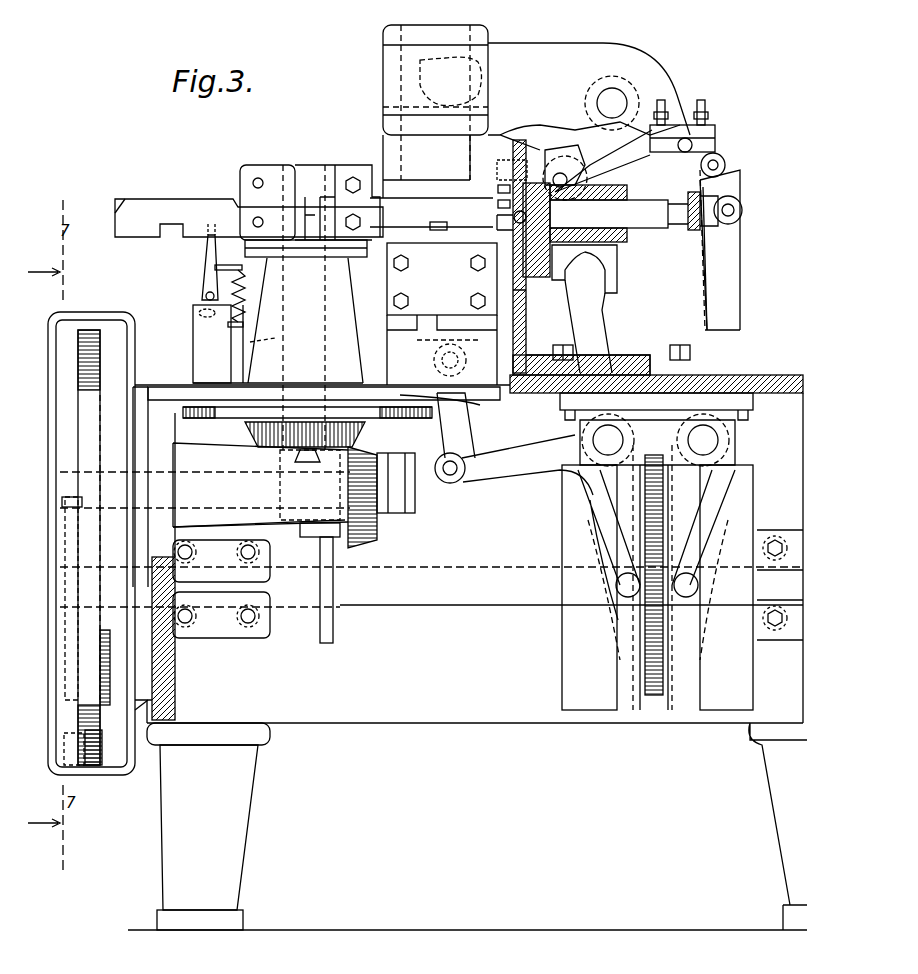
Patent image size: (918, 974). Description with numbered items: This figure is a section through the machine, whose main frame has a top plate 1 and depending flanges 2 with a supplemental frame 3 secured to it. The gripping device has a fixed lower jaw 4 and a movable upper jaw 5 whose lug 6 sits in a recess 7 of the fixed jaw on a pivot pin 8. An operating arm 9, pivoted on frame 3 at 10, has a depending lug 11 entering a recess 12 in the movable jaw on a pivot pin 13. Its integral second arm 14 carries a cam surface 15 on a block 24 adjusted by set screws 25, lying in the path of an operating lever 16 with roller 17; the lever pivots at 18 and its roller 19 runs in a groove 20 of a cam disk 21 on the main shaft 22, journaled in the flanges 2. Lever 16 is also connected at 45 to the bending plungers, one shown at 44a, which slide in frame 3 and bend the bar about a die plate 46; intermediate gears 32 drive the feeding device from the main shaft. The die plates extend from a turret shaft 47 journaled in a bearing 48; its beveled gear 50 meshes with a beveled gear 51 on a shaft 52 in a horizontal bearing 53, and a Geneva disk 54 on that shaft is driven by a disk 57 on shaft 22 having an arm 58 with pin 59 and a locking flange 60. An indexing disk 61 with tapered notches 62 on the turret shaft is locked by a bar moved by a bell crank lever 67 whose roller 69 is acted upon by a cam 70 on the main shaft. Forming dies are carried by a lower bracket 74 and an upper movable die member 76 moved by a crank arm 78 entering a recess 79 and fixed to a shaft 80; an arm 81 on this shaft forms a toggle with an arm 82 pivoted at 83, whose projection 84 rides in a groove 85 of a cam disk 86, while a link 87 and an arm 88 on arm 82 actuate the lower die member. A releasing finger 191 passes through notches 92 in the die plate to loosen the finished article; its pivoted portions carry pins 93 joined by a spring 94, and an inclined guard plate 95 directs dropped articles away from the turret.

The top plate 1 is at (768, 383).
The depending flanges 2 is at (172, 680).
The supplemental frame 3 is at (527, 330).
The fixed lower jaw 4 is at (500, 225).
The movable upper jaw 5 is at (497, 205).
The lug 6 is at (522, 210).
The recess 7 is at (553, 214).
The pivot pin 8 is at (582, 205).
The operating arm 9 is at (540, 180).
The pivot 10 is at (555, 165).
The depending lug 11 is at (505, 160).
The recess 12 is at (510, 183).
The pivot pin 13 is at (498, 200).
The second arm 14 is at (640, 152).
The cam surface 15 is at (725, 165).
The operating lever 16 is at (740, 246).
The roller 17 is at (733, 200).
The pivot 18 is at (718, 441).
The projection or roller 19 is at (698, 588).
The circumferential groove 20 is at (693, 672).
The cam disk 21 is at (745, 660).
The main operating shaft 22 is at (450, 604).
The block 24 is at (715, 142).
The set screws 25 is at (702, 100).
The intermediate gears 32 is at (660, 512).
The nut 44a is at (648, 220).
The pivotal connection 45 is at (712, 210).
The die plate 46 is at (190, 198).
The vertical shaft 47 is at (250, 346).
The bearing 48 is at (260, 318).
The beveled gear 50 is at (248, 436).
The second beveled gear 51 is at (372, 448).
The shaft 52 is at (225, 472).
The horizontal bearing 53 is at (268, 525).
The feeding disk 54 is at (88, 372).
The second disk 57 is at (70, 540).
The radially projecting arm 58 is at (78, 704).
The pin 59 is at (100, 748).
The flange 60 is at (70, 497).
The disk 61 is at (417, 418).
The radial notches 62 is at (305, 405).
The bell crank lever 67 is at (300, 483).
The roller 69 is at (320, 540).
The cam 70 is at (318, 640).
The lower bracket 74 is at (397, 280).
The movable die member 76 is at (388, 60).
The crank arm 78 is at (556, 82).
The recess 79 is at (425, 62).
The shaft 80 is at (617, 101).
The arm 81 is at (618, 265).
The arm 82 is at (595, 330).
The pivot 83 is at (594, 441).
The projection 84 is at (616, 588).
The groove 85 is at (630, 662).
The cam disk 86 is at (570, 660).
The link 87 is at (456, 428).
The arm 88 is at (508, 470).
The notches 92 is at (165, 237).
The pins 93 is at (230, 265).
The spring 94 is at (257, 283).
The inclined guard plate 95 is at (193, 347).
The finger 191 is at (208, 248).